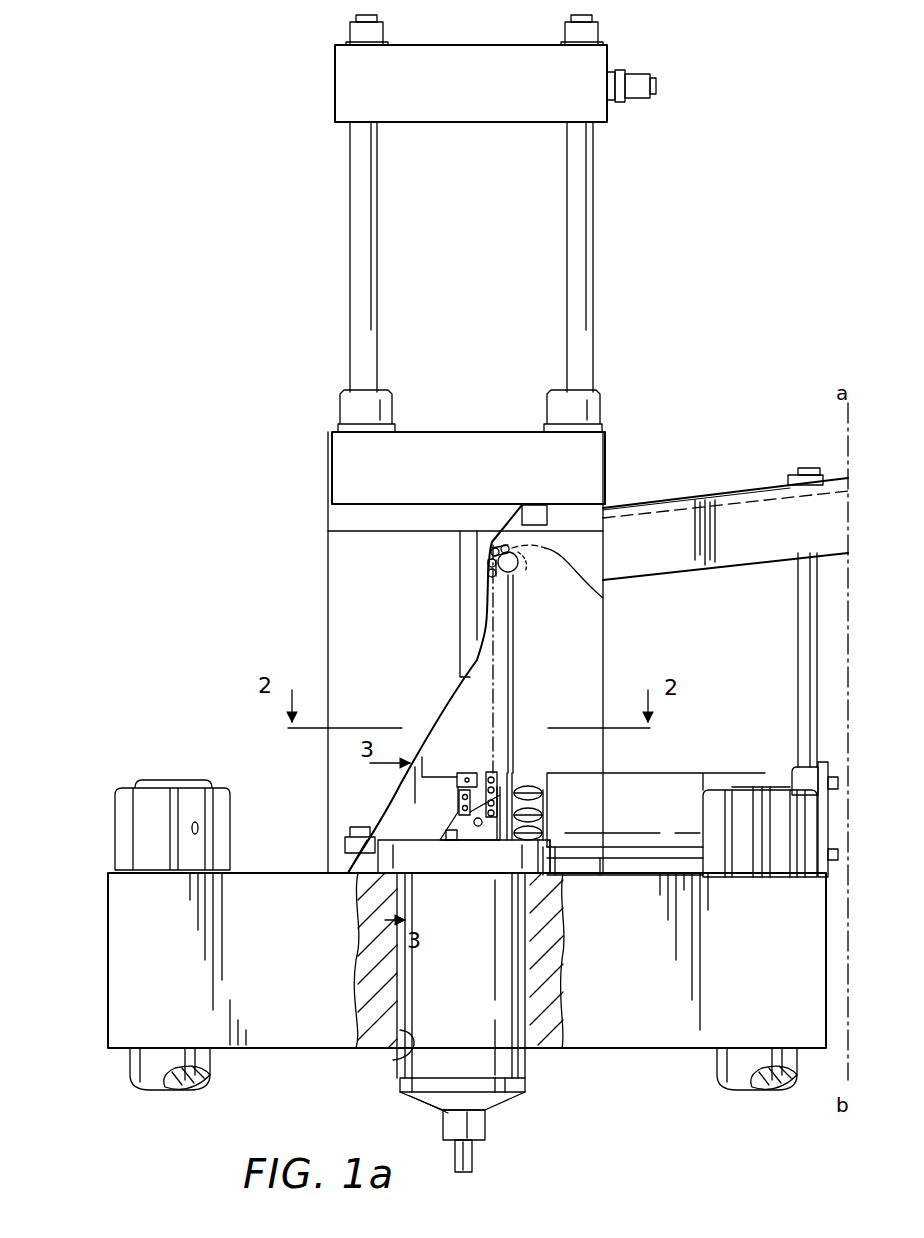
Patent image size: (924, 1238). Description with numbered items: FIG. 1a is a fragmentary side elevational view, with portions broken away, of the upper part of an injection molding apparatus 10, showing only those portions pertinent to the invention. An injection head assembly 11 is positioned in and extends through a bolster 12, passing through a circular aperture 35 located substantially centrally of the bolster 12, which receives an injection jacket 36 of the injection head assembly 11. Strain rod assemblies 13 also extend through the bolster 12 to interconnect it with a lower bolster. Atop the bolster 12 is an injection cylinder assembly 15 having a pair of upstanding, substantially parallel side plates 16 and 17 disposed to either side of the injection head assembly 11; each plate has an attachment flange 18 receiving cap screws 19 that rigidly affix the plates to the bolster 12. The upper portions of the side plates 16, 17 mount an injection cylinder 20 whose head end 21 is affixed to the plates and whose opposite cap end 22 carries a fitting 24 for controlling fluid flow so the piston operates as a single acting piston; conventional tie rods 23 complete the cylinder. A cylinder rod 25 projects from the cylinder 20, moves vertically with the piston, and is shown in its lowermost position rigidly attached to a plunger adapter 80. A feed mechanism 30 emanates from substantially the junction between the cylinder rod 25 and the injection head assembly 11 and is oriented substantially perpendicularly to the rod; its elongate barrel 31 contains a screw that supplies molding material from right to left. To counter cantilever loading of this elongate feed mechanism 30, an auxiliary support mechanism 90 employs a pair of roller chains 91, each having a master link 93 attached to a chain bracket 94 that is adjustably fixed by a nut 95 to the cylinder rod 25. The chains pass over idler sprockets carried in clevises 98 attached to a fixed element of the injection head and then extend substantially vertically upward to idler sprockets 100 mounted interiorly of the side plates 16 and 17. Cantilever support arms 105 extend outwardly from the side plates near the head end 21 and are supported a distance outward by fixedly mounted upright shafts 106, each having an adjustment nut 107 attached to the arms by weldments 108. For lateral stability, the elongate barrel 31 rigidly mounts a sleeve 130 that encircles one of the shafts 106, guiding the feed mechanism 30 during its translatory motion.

The injection molding apparatus 10 is at (710, 300).
The injection head assembly 11 is at (525, 1097).
The bolster 12 is at (298, 1052).
The strain rod assemblies 13 is at (187, 1092).
The injection cylinder assembly 15 is at (320, 480).
The side plate 16 is at (345, 573).
The side plate 17 is at (585, 641).
The attachment flange 18 is at (338, 866).
The cap screws 19 is at (352, 842).
The injection cylinder 20 is at (481, 174).
The head end 21 is at (463, 474).
The cap end 22 is at (470, 72).
The tie rods 23 is at (357, 164).
The fitting 24 is at (636, 84).
The cylinder rod 25 is at (470, 682).
The feed mechanism 30 is at (696, 765).
The elongate barrel 31 is at (706, 775).
The circular aperture 35 is at (396, 1060).
The injection jacket 36 is at (527, 1068).
The plunger adapter 80 is at (445, 825).
The auxiliary support mechanism 90 is at (545, 778).
The roller chains 91 is at (488, 570).
The master link 93 is at (423, 805).
The chain bracket 94 is at (457, 792).
The nut 95 is at (470, 770).
The clevises 98 is at (473, 833).
The idler sprockets 100 is at (605, 592).
The cantilever support arms 105 is at (784, 540).
The upright shafts 106 is at (805, 616).
The adjustment nut 107 is at (800, 478).
The weldments 108 is at (790, 488).
The sleeve 130 is at (808, 782).